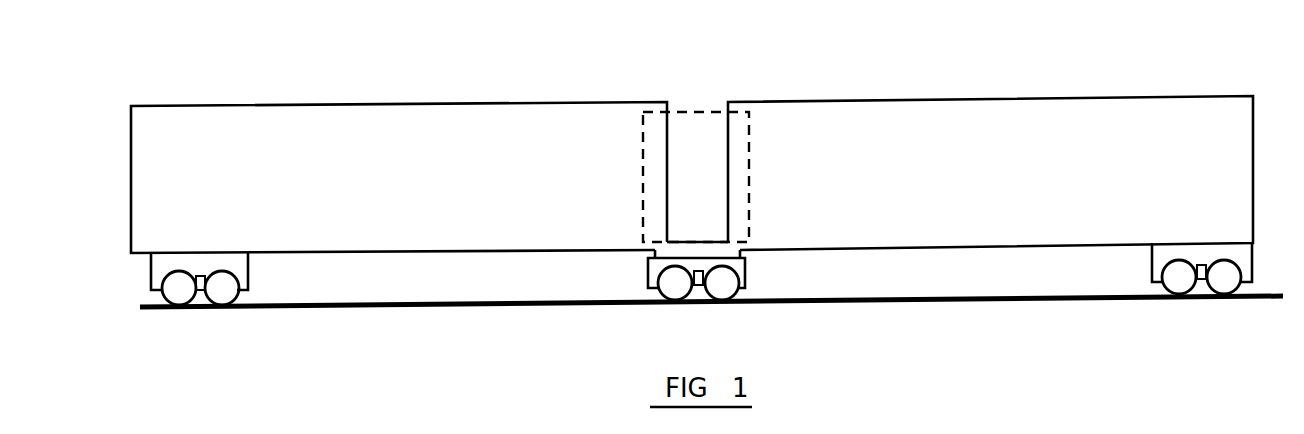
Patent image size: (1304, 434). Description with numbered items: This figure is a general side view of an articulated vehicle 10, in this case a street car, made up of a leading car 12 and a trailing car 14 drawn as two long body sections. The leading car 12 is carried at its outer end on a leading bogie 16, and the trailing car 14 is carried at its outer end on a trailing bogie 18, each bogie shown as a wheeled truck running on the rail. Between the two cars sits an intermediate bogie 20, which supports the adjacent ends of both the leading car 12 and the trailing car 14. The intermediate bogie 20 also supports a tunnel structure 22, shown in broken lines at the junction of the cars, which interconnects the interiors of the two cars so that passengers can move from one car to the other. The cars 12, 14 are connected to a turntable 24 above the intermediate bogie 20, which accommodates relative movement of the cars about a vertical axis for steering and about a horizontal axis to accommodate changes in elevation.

The articulated vehicle 10 is at (636, 91).
The leading car 12 is at (1043, 137).
The trailing car 14 is at (407, 140).
The leading bogie 16 is at (1200, 288).
The trailing bogie 18 is at (200, 292).
The intermediate bogie 20 is at (697, 290).
The tunnel structure 22 is at (700, 122).
The turntable 24 is at (730, 269).